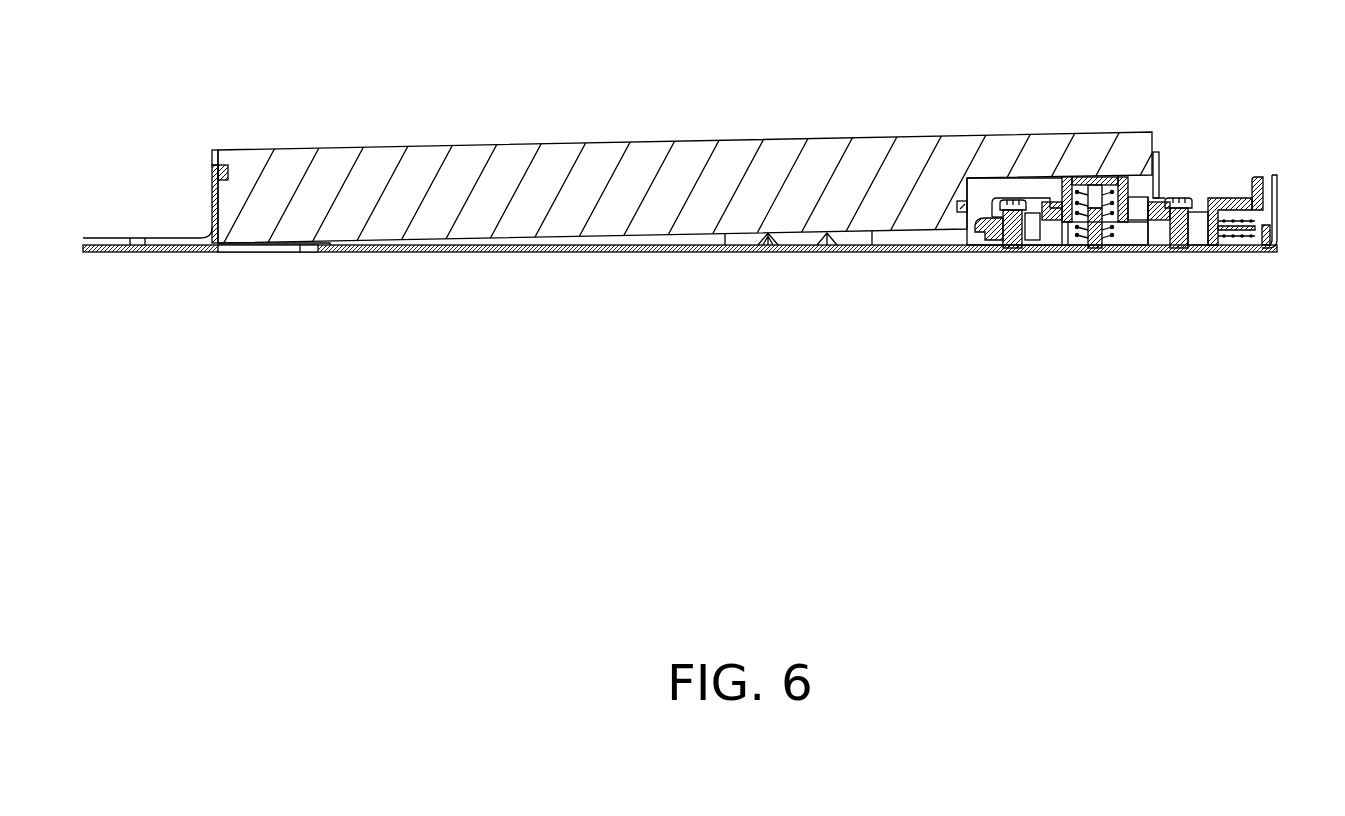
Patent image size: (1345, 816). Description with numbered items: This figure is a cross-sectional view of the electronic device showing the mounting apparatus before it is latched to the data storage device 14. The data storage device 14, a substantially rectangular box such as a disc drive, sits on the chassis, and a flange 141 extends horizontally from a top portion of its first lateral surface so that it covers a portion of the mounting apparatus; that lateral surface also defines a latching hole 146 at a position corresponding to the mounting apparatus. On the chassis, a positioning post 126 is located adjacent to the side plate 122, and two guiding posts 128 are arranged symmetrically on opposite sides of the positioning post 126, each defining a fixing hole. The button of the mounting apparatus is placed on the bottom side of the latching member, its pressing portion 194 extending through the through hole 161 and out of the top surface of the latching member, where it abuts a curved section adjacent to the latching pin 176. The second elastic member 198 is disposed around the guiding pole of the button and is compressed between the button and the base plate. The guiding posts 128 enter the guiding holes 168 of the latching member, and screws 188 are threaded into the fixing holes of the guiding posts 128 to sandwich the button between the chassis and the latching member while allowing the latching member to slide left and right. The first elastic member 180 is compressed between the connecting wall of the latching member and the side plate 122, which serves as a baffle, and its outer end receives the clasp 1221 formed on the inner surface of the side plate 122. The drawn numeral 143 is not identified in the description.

The data storage device 14 is at (620, 165).
The flange 141 is at (998, 178).
The side wall of housing 143 is at (962, 195).
The latching hole 146 is at (958, 205).
The latching pin 176 is at (977, 226).
The guiding hole 168 is at (1035, 218).
The positioning post 126 is at (1127, 222).
The pressing portion 194 is at (1079, 177).
The second elastic member 198 is at (1076, 233).
The through hole 161 is at (1138, 215).
The screw 188 is at (1183, 198).
The guiding post 128 is at (1197, 232).
The first elastic member 180 is at (1245, 235).
The side plate 122 is at (1280, 205).
The clasp 1221 is at (1262, 250).